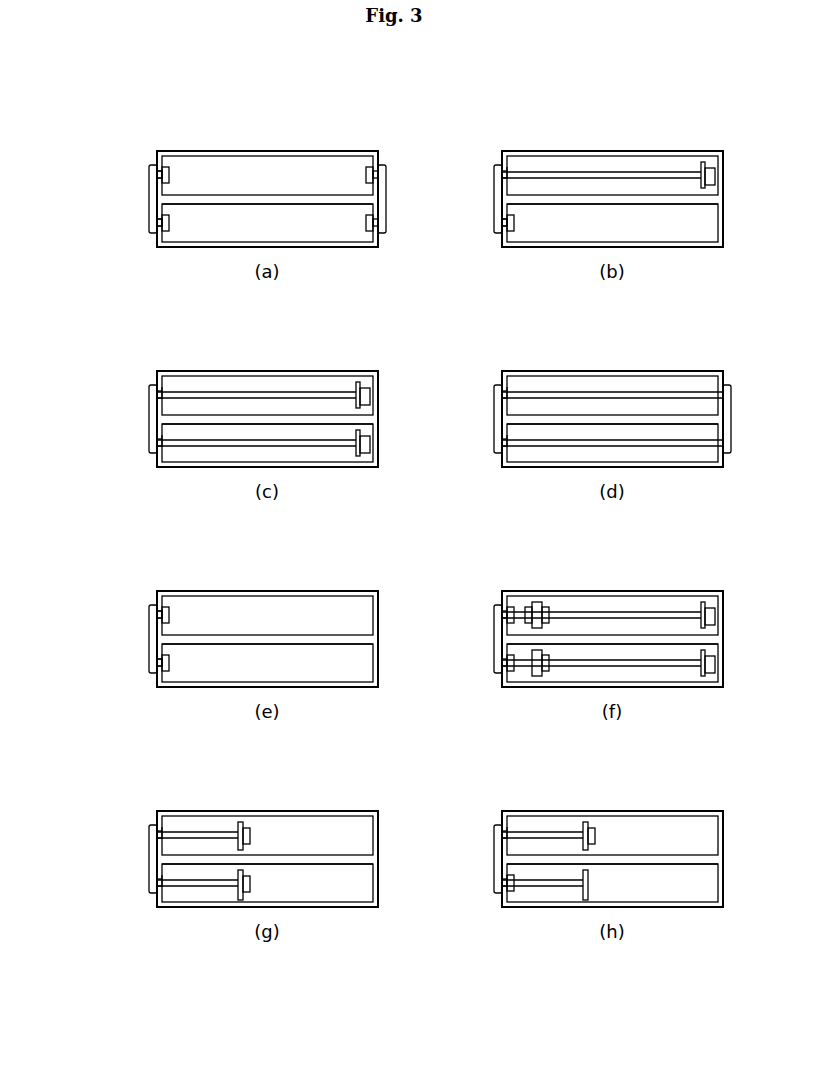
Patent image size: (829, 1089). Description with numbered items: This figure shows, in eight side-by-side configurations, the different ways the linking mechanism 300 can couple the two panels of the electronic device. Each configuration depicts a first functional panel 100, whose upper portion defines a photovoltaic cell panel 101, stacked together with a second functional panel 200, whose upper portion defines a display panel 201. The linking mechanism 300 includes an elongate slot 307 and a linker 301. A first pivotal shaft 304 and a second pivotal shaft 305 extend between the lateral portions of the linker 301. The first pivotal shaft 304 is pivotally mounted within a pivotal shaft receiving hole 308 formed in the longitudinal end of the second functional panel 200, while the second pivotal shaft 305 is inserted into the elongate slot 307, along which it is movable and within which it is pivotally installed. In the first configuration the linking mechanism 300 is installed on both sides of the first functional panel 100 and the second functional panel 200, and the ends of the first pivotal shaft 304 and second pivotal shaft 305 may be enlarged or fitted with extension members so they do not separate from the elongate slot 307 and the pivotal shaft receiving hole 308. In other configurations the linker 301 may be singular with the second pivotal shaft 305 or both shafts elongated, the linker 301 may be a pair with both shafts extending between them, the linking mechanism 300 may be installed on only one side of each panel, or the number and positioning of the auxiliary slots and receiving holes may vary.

The first functional panel 100 is at (440, 499).
The photovoltaic cell panel 101 is at (440, 478).
The second functional panel 200 is at (440, 584).
The display panel 201 is at (440, 483).
The linking mechanism 300 is at (283, 523).
The linker 301 is at (293, 529).
The first pivotal shaft 304 is at (440, 580).
The second pivotal shaft 305 is at (403, 470).
The elongate slot 307 is at (318, 466).
The pivotal shaft receiving hole 308 is at (316, 578).